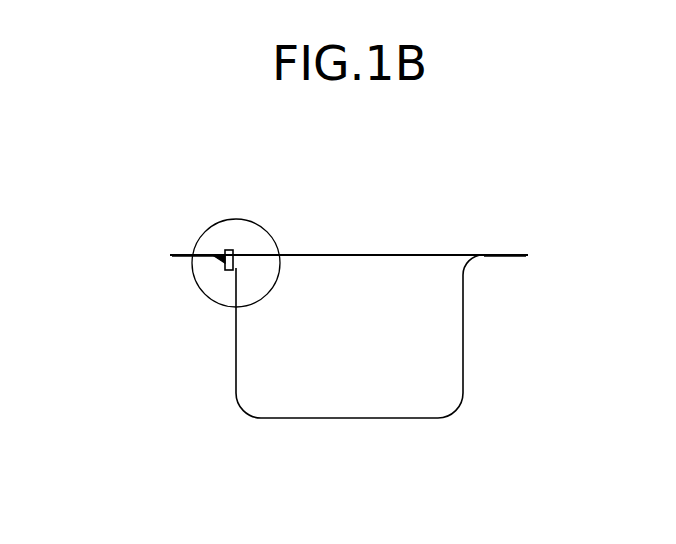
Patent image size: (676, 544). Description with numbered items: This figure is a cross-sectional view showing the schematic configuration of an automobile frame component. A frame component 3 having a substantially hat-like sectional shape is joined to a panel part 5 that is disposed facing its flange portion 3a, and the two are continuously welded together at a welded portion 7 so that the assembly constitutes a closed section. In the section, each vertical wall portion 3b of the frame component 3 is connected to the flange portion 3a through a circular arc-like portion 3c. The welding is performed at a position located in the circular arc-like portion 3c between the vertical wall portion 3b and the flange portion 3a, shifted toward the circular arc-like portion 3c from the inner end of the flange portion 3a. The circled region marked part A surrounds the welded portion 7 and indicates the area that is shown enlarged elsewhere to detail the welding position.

The frame component 3 is at (350, 418).
The flange portion 3a is at (187, 257).
The vertical wall portion 3b is at (236, 366).
The circular arc-like portion 3c is at (222, 266).
The panel part 5 is at (368, 254).
The welded portion 7 is at (228, 250).
The part A is at (250, 220).